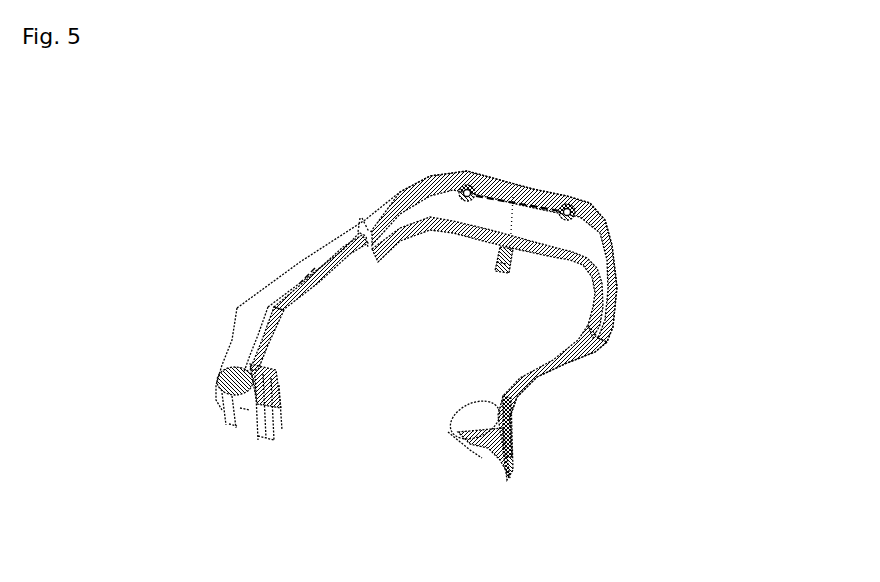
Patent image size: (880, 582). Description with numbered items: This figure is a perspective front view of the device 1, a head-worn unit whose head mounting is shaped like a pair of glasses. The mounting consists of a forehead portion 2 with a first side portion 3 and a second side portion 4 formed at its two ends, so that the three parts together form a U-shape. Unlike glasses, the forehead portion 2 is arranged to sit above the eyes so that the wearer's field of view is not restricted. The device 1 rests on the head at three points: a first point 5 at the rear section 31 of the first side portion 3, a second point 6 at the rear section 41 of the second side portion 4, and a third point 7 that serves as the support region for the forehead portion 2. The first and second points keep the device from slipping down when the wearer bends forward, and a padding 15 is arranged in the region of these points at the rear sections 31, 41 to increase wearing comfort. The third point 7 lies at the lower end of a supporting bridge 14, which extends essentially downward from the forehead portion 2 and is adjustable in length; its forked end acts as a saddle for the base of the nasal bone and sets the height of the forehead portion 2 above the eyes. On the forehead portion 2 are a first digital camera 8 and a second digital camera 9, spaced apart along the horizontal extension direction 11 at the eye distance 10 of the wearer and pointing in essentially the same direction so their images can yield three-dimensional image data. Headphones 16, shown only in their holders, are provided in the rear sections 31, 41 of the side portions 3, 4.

The device 1 is at (176, 171).
The forehead portion 2 is at (587, 227).
The first side portion 3 is at (343, 247).
The rear section of the first side portion 31 is at (252, 317).
The second side portion 4 is at (587, 333).
The rear section of the second side portion 41 is at (508, 395).
The first point 5 is at (270, 388).
The second point 6 is at (472, 420).
The third point 7 is at (500, 270).
The first digital camera 8 is at (463, 192).
The second digital camera 9 is at (570, 210).
The eye distance 10 is at (495, 134).
The horizontal extension direction 11 is at (510, 197).
The supporting bridge 14 is at (510, 253).
The padding 15 is at (447, 447).
The headphones 16 is at (227, 405).